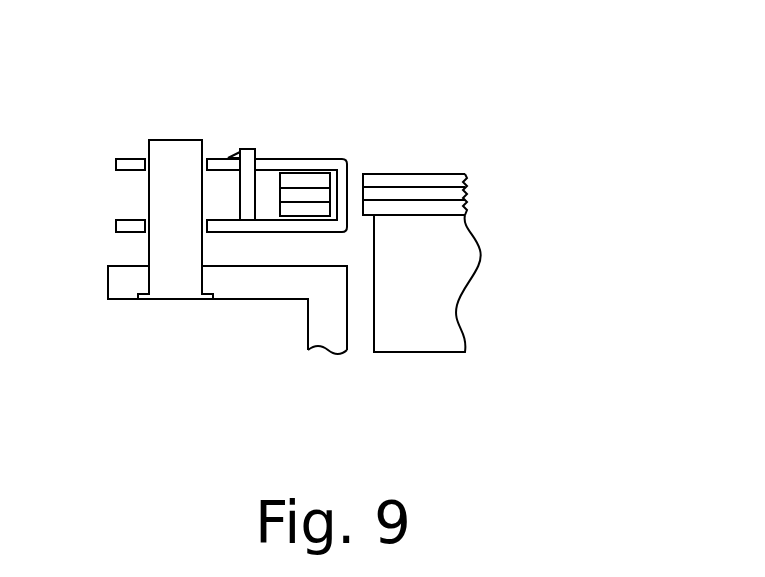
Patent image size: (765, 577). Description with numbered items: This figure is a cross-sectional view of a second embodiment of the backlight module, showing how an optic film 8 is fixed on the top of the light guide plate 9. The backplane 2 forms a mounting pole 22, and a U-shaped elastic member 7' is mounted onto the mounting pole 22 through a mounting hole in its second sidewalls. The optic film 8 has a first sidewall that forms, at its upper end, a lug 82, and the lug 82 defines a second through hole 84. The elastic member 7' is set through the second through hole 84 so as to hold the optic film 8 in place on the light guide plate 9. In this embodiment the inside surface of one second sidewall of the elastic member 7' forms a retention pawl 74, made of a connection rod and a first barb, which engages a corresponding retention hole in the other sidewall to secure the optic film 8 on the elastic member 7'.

The backplane 2 is at (125, 288).
The mounting pole 22 is at (187, 218).
The retention pawl 74 is at (247, 192).
The elastic member 7' is at (277, 133).
The lug 82 is at (307, 185).
The second through hole 84 is at (353, 185).
The optic film 8 is at (415, 201).
The light guide plate 9 is at (412, 272).